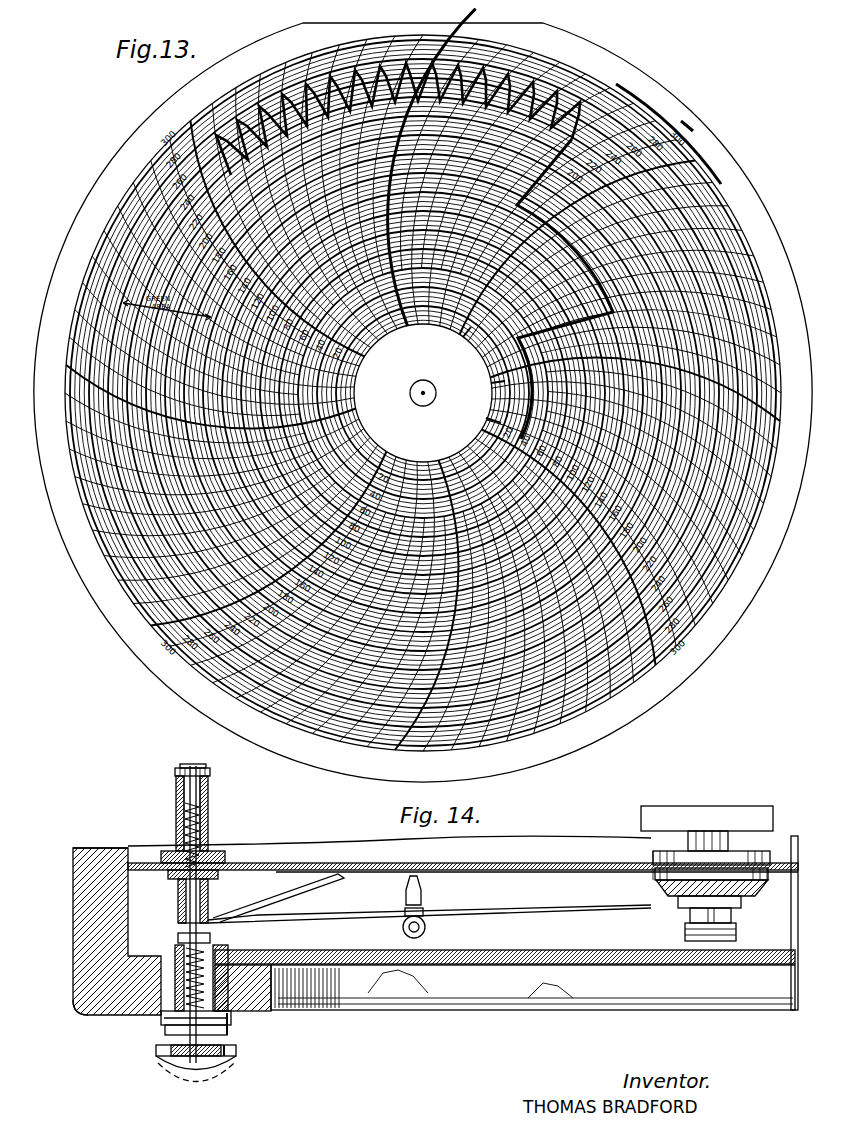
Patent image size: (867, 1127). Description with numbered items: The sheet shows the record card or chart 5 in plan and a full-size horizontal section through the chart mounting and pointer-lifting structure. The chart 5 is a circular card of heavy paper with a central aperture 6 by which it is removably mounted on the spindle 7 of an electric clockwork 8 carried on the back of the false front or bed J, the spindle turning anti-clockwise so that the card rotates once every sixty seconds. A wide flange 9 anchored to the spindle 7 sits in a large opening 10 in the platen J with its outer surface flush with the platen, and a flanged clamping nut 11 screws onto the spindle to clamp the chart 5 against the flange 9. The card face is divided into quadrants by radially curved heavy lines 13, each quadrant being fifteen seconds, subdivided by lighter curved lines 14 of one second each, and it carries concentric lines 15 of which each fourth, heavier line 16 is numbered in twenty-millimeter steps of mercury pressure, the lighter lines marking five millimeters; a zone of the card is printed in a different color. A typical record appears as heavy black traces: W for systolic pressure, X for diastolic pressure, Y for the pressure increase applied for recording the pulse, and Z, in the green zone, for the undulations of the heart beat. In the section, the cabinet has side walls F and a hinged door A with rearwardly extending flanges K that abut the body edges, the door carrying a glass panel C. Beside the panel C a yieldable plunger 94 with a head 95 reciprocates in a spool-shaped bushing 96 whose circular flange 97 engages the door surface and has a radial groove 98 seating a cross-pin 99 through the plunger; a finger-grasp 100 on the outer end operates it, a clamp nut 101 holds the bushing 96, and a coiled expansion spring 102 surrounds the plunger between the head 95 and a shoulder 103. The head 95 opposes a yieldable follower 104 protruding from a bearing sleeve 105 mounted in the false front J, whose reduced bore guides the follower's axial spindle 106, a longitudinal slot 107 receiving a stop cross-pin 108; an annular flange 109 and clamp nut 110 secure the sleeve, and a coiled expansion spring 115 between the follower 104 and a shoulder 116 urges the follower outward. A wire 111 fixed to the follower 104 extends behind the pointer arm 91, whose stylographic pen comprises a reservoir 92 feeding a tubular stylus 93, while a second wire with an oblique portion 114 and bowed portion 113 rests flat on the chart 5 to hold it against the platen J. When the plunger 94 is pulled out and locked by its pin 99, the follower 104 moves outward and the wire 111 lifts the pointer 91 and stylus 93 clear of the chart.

In FIG. 13, the record card or chart 5 is at (423, 402).
In FIG. 14, the record card or chart 5 is at (268, 866).
In FIG. 13, the central aperture 6 is at (423, 377).
In FIG. 14, the spindle 7 is at (705, 855).
In FIG. 14, the electric clockwork 8 is at (650, 815).
In FIG. 14, the wide flange 9 is at (645, 850).
In FIG. 14, the opening 10 is at (762, 848).
In FIG. 14, the flanged clamping nut 11 is at (738, 889).
In FIG. 13, the radially curved heavy lines 13 is at (423, 393).
In FIG. 13, the radially curved lighter lines 14 is at (496, 225).
In FIG. 13, the concentric lines 15 is at (442, 393).
In FIG. 13, the heavier concentric line 16 is at (437, 393).
In FIG. 14, the inscribing pointer arm 91 is at (417, 903).
In FIG. 14, the cup or reservoir 92 is at (395, 921).
In FIG. 14, the tubular stylus 93 is at (413, 876).
In FIG. 14, the yieldable plunger 94 is at (157, 1022).
In FIG. 14, the plunger head 95 is at (170, 930).
In FIG. 14, the spool-shaped bushing 96 is at (227, 997).
In FIG. 14, the circular flange 97 is at (223, 1017).
In FIG. 14, the radial groove 98 is at (181, 1030).
In FIG. 14, the cross-pin 99 is at (226, 1052).
In FIG. 14, the finger-grasp or handle 100 is at (165, 1060).
In FIG. 14, the clamp nut or annulus 101 is at (212, 937).
In FIG. 14, the coiled expansion spring 102 is at (225, 945).
In FIG. 14, the shoulder 103 is at (153, 1010).
In FIG. 14, the yieldable follower 104 is at (200, 886).
In FIG. 14, the bearing sleeve 105 is at (200, 830).
In FIG. 14, the axial spindle 106 is at (200, 795).
In FIG. 14, the longitudinal slot 107 is at (203, 765).
In FIG. 14, the cross-pin 108 is at (173, 757).
In FIG. 14, the annular flange 109 is at (165, 871).
In FIG. 14, the clamp nut 110 is at (217, 848).
In FIG. 14, the wire 111 is at (513, 899).
In FIG. 14, the bowed portion 113 is at (486, 864).
In FIG. 14, the off-set obliquely bent portion 114 is at (317, 880).
In FIG. 14, the coiled expansion spring 115 is at (172, 826).
In FIG. 14, the shoulder 116 is at (168, 793).
In FIG. 13, the heart-beat record line Z is at (441, 167).
In FIG. 13, the systolic pressure line W is at (462, 347).
In FIG. 13, the diastolic pressure line X is at (479, 388).
In FIG. 13, the pulse-recording pressure increase line Y is at (476, 418).
In FIG. 14, the side walls F is at (76, 838).
In FIG. 14, the false front or bed J is at (127, 837).
In FIG. 14, the flanges K is at (70, 910).
In FIG. 14, the front or door A is at (73, 990).
In FIG. 14, the glass panel C is at (540, 960).